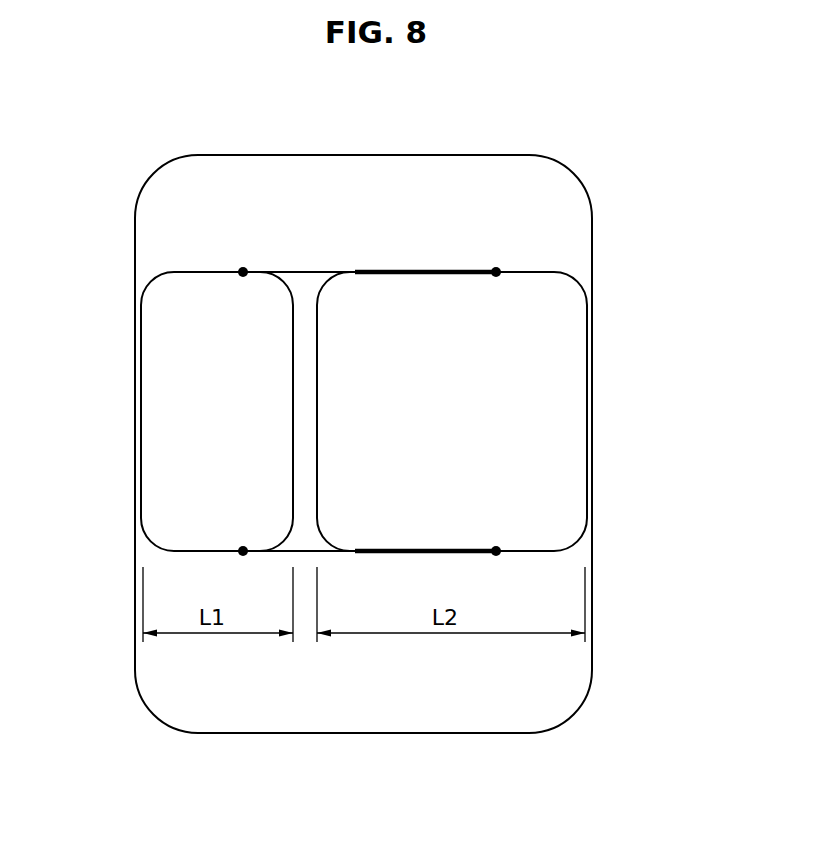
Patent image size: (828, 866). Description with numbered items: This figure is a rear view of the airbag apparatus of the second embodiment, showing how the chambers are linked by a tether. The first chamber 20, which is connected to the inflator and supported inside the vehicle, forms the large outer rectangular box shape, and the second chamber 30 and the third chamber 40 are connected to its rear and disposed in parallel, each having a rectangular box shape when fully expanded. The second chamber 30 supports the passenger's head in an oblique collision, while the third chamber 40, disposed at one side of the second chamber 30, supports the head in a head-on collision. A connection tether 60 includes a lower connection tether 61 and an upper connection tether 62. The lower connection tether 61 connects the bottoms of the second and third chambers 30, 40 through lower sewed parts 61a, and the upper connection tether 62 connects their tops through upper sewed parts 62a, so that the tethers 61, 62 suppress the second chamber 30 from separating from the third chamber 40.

The first chamber 20 is at (502, 733).
The second chamber 30 is at (178, 385).
The third chamber 40 is at (550, 337).
The connection tether 60 is at (449, 451).
The lower connection tether 61 is at (449, 638).
The lower sewed part 61a is at (496, 551).
The upper connection tether 62 is at (394, 189).
The upper sewed part 62a is at (496, 272).